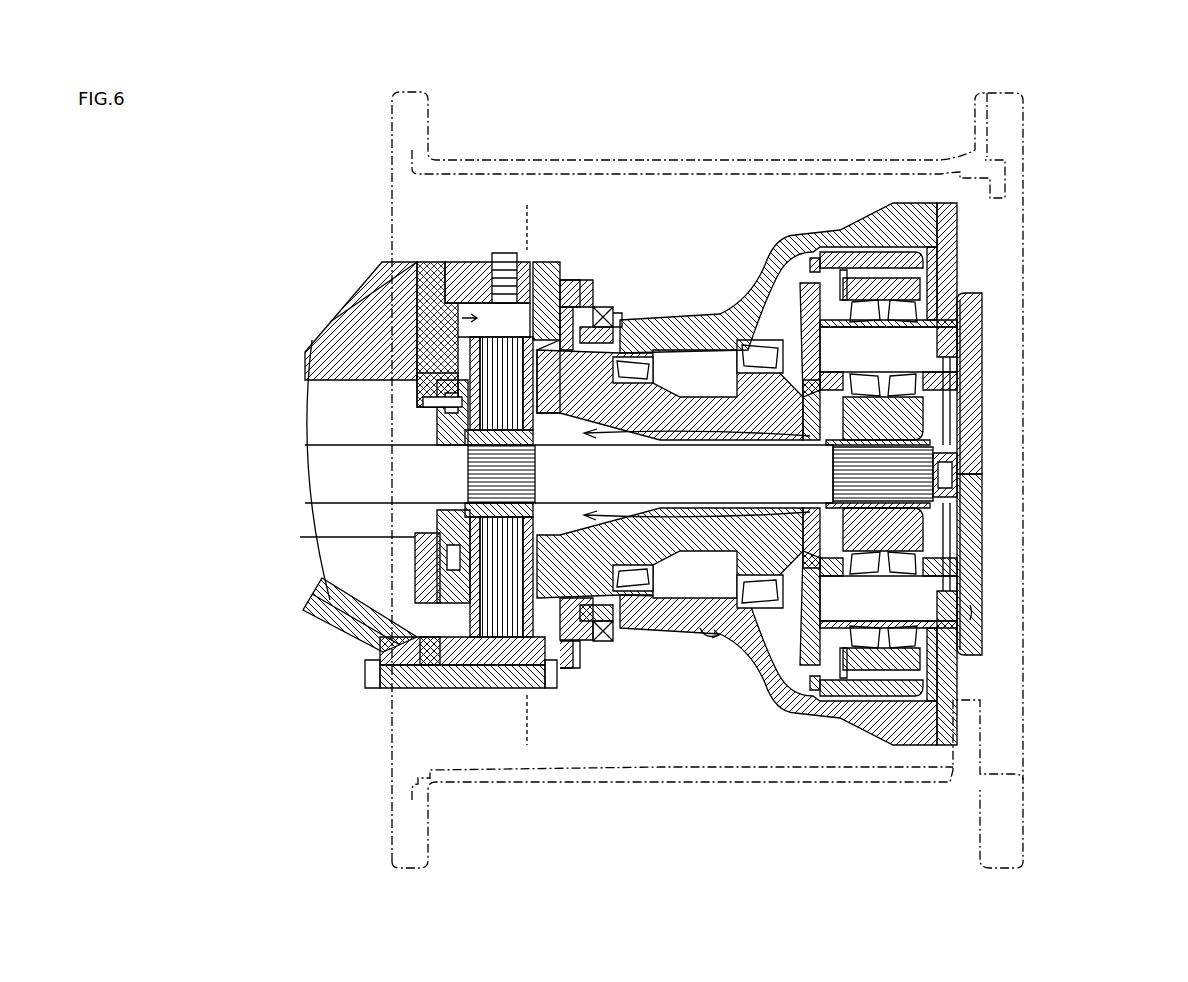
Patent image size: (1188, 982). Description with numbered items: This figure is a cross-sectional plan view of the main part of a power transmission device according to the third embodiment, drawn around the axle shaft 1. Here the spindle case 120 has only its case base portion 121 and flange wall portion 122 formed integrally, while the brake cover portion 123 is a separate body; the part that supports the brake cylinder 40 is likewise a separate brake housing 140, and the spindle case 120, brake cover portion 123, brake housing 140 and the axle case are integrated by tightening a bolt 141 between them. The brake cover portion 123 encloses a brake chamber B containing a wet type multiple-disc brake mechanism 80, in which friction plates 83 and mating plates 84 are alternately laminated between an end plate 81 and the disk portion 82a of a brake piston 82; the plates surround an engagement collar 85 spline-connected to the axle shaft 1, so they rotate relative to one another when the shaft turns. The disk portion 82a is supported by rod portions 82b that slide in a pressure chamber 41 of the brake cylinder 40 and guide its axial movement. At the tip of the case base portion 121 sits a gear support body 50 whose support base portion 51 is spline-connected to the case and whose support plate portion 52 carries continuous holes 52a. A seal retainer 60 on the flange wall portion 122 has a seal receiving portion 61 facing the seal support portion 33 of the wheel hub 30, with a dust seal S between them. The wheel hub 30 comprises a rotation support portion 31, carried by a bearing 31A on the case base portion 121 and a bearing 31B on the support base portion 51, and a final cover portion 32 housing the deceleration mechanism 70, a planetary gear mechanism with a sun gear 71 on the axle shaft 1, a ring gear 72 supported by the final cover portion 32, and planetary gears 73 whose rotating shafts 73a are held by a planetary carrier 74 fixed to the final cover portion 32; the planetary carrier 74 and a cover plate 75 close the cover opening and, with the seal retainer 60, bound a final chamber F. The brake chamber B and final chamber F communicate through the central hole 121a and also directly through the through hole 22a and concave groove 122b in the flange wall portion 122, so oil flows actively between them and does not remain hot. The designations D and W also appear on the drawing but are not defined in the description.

The axle shaft 1 is at (333, 452).
The through hole 22a is at (575, 280).
The wheel hub 30 is at (735, 118).
The rotation support portion 31 is at (718, 322).
The bearing 31A is at (635, 612).
The bearing 31B is at (722, 640).
The final cover portion 32 is at (825, 240).
The seal support portion 33 is at (600, 628).
The brake cylinder 40 is at (340, 340).
The pressure chamber 41 is at (365, 335).
The gear support body 50 is at (808, 822).
The support base portion 51 is at (750, 650).
The support plate portion 52 is at (790, 640).
The continuous holes 52a is at (818, 690).
The seal retainer 60 is at (607, 300).
The seal receiving portion 61 is at (603, 305).
The deceleration mechanism 70 is at (1130, 365).
The sun gear 71 is at (940, 510).
The ring gear 72 is at (980, 570).
The planetary gears 73 is at (935, 408).
The rotating shaft 73a is at (945, 355).
The planetary carrier 74 is at (950, 307).
The cover plate 75 is at (975, 608).
The brake mechanism 80 is at (178, 600).
The end plate 81 is at (480, 445).
The brake piston 82 is at (228, 580).
The disk portion 82a is at (430, 392).
The rod portions 82b is at (440, 567).
The friction plates 83 is at (485, 455).
The mating plates 84 is at (345, 622).
The engagement collar 85 is at (470, 430).
The spindle case 120 is at (538, 98).
The case base portion 121 is at (665, 395).
The central hole 121a is at (668, 395).
The flange wall portion 122 is at (565, 285).
The concave groove 122b is at (535, 262).
The brake cover portion 123 is at (473, 262).
The brake housing 140 is at (436, 262).
The bolt 141 is at (433, 670).
The brake chamber B is at (390, 300).
The distance D is at (520, 226).
The final chamber F is at (700, 625).
The dust seal S is at (622, 320).
The wheel W is at (910, 790).